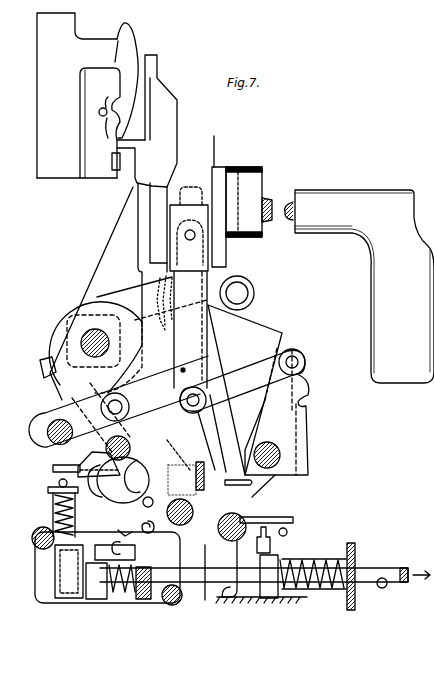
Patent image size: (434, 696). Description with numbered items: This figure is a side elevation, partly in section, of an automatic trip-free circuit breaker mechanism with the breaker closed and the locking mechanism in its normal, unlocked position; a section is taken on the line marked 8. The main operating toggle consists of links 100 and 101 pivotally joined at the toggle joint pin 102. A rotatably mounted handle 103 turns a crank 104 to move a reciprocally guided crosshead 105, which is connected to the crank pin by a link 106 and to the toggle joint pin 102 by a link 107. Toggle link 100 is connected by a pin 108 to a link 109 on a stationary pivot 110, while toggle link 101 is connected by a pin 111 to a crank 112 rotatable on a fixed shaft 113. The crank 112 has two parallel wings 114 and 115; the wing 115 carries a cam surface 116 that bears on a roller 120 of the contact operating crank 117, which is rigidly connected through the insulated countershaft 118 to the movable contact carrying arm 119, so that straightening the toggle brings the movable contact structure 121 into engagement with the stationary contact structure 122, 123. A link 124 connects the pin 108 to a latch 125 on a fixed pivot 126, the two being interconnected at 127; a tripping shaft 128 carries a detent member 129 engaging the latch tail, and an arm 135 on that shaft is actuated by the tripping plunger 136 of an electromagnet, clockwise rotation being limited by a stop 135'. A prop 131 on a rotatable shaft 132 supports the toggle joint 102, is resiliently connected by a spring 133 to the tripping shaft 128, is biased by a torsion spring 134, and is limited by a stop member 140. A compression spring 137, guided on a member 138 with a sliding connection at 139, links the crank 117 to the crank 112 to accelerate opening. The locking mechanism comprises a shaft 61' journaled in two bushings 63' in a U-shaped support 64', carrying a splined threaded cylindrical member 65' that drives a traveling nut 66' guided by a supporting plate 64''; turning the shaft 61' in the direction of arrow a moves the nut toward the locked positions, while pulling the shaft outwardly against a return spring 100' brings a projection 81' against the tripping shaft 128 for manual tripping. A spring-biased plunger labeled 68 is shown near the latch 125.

The stationary contact structure 123 is at (137, 38).
The movable contact structure 121 is at (177, 133).
The stationary contact structure 122 is at (97, 178).
The movable contact carrying arm 119 is at (103, 236).
The countershaft 118 is at (84, 338).
The contact operating crank 117 is at (122, 298).
The link 106 is at (217, 195).
The crosshead 105 is at (196, 200).
The crank 104 is at (256, 171).
The handle 103 is at (312, 191).
The roller 120 is at (255, 295).
The cam surface 116 is at (258, 323).
The wing 115 is at (261, 343).
The pin 111 is at (300, 353).
The toggle link 101 is at (240, 364).
The link 107 is at (184, 368).
The toggle link 100 is at (118, 401).
The toggle joint pin 102 is at (181, 398).
The crank 112 is at (301, 398).
The wing 114 is at (279, 439).
The pin 108 is at (108, 396).
The link 109 is at (74, 412).
The fixed shaft 113 is at (266, 447).
The fixed pivot 126 is at (112, 442).
The stationary pivot 110 is at (54, 437).
The member 138 is at (275, 490).
The latch 125 is at (135, 463).
The link 124 is at (157, 437).
The prop 131 is at (160, 477).
The compression spring 137 is at (205, 458).
The interconnection 127 is at (143, 503).
The rotatable shaft 132 is at (189, 508).
The torsion spring 134 is at (145, 524).
The guided sliding connection 139 is at (91, 483).
The spring 133 is at (119, 530).
The spring 68 is at (58, 483).
The section arrow 8 is at (47, 514).
The arm 135 is at (305, 512).
The stop 135' is at (311, 526).
The tripping plunger 136 is at (272, 547).
The tripping shaft 128 is at (244, 522).
The return spring 100' is at (307, 575).
The shaft 61' is at (265, 563).
The arrow a is at (382, 594).
The detent member 129 is at (205, 600).
The projection 81' is at (261, 615).
The stop member 140 is at (183, 595).
The bushings 63' is at (106, 582).
The U-shaped support 64' is at (69, 586).
The traveling nut 66' is at (94, 600).
The threaded cylindrical member 65' is at (120, 601).
The supporting plate 64'' is at (142, 602).